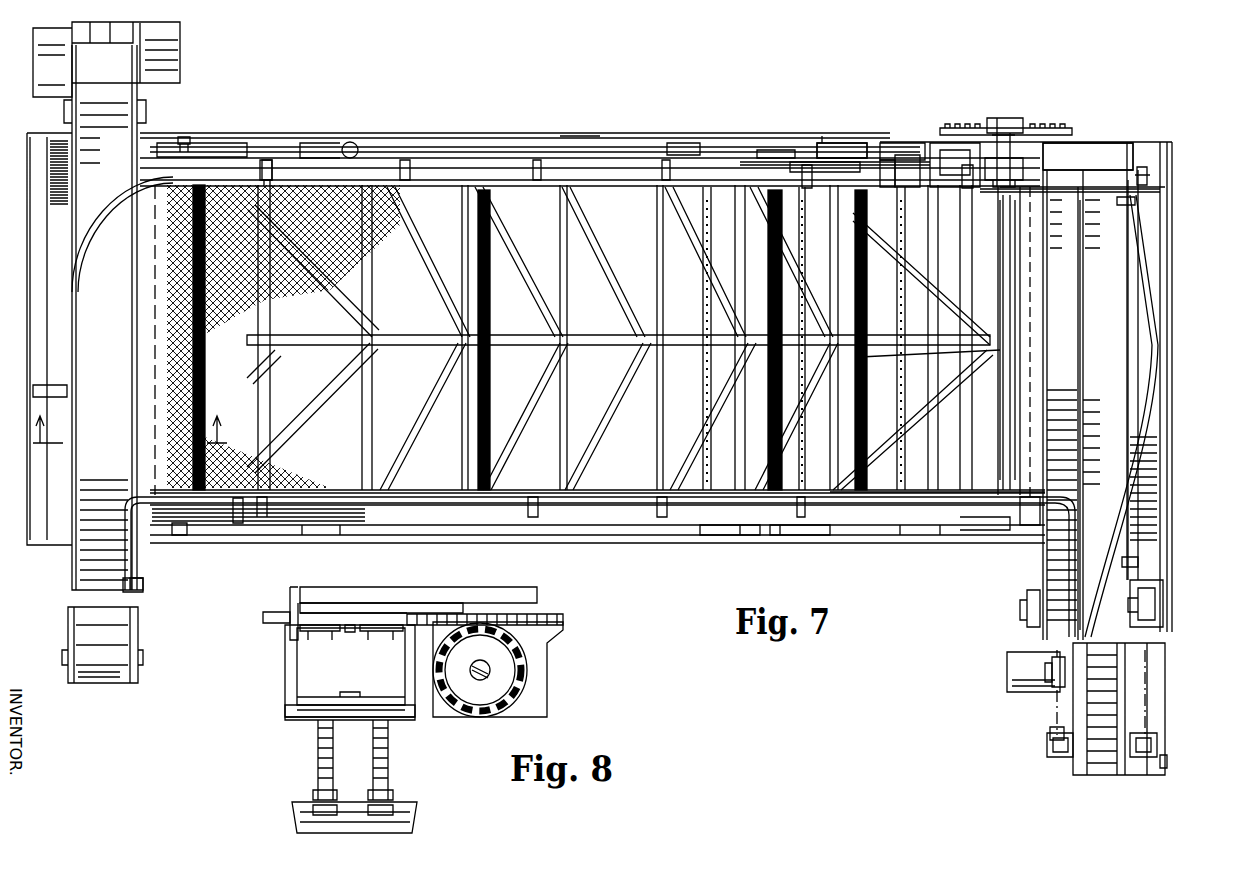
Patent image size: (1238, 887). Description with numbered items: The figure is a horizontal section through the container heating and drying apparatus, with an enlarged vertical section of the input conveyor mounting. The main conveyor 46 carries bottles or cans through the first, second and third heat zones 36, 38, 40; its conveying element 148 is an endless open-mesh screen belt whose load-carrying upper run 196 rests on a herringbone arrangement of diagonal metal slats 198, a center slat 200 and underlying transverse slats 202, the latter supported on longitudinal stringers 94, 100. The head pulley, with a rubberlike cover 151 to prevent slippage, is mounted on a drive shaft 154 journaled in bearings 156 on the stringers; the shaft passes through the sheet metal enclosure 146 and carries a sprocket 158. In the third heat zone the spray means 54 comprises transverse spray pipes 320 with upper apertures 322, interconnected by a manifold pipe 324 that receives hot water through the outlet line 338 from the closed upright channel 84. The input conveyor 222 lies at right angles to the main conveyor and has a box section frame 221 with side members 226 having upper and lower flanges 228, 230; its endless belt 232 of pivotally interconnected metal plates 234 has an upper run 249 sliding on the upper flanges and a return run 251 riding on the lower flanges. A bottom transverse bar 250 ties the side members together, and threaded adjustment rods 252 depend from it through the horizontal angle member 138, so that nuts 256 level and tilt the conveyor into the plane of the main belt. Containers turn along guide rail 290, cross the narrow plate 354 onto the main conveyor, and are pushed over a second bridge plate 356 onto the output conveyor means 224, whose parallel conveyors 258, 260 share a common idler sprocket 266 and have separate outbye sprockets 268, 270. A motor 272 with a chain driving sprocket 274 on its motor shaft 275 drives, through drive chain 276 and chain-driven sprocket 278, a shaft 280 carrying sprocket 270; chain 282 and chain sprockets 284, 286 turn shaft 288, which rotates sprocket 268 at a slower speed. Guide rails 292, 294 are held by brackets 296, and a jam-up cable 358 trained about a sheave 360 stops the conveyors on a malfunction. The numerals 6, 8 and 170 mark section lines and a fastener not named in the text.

In FIG. 7, the cross bar 6 is at (40, 386).
In FIG. 7, the section line 8 is at (129, 420).
In FIG. 7, the first heat zone 36 is at (359, 128).
In FIG. 7, the second heat zone 38 is at (576, 127).
In FIG. 7, the third heat zone 40 is at (784, 128).
In FIG. 7, the main conveyor 46 is at (605, 190).
In FIG. 7, the sprays 54 is at (805, 527).
In FIG. 7, the upright channel member 84 is at (895, 158).
In FIG. 7, the longitudinal stringer channel 94 is at (742, 527).
In FIG. 7, the longitudinal stringer 100 is at (708, 162).
In FIG. 8, the horizontal angle member 138 is at (410, 822).
In FIG. 7, the sheet metal enclosure 146 is at (405, 142).
In FIG. 7, the conveying element 148 is at (290, 185).
In FIG. 7, the rubberlike cover 151 is at (1015, 258).
In FIG. 7, the drive shaft 154 is at (1003, 130).
In FIG. 7, the bearings 156 is at (1015, 160).
In FIG. 7, the sprocket 158 is at (968, 128).
In FIG. 7, the fastener 170 is at (183, 136).
In FIG. 7, the upper run 196 is at (305, 290).
In FIG. 8, the upper run 196 is at (560, 622).
In FIG. 7, the diagonal metal slats 198 is at (540, 255).
In FIG. 7, the center slat 200 is at (402, 346).
In FIG. 7, the transverse slats 202 is at (268, 158).
In FIG. 8, the box section frame 221 is at (280, 651).
In FIG. 7, the input conveyor 222 is at (66, 583).
In FIG. 8, the input conveyor 222 is at (360, 598).
In FIG. 7, the output conveyor means 224 is at (1095, 155).
In FIG. 8, the side members 226 is at (286, 665).
In FIG. 8, the upper flanges 228 is at (318, 632).
In FIG. 8, the lower flanges 230 is at (288, 710).
In FIG. 8, the endless belt 232 is at (353, 640).
In FIG. 7, the metal plates 234 is at (78, 640).
In FIG. 8, the upper run 249 is at (405, 610).
In FIG. 8, the bottom transverse bar 250 is at (312, 720).
In FIG. 8, the return run 251 is at (315, 696).
In FIG. 8, the adjustment rods 252 is at (318, 765).
In FIG. 8, the nuts 256 is at (313, 810).
In FIG. 7, the output conveyor 258 is at (1060, 297).
In FIG. 7, the output conveyor 260 is at (1130, 260).
In FIG. 7, the common idler sprocket 266 is at (1150, 200).
In FIG. 7, the sprocket 268 is at (1027, 615).
In FIG. 7, the sprocket 270 is at (1073, 776).
In FIG. 7, the motor 272 is at (1010, 680).
In FIG. 7, the chain driving sprocket 274 is at (1058, 657).
In FIG. 7, the motor shaft 275 is at (1048, 675).
In FIG. 7, the drive chain 276 is at (1055, 722).
In FIG. 7, the chain-driven sprocket 278 is at (1048, 736).
In FIG. 7, the shaft 280 is at (1062, 758).
In FIG. 7, the chain 282 is at (1150, 700).
In FIG. 7, the chain sprocket 284 is at (1155, 765).
In FIG. 7, the chain sprocket 286 is at (1165, 590).
In FIG. 7, the shaft 288 is at (1140, 590).
In FIG. 7, the guide rail 290 is at (112, 202).
In FIG. 8, the guide rail 290 is at (515, 598).
In FIG. 7, the guide rail 292 is at (240, 525).
In FIG. 7, the guide rail 294 is at (1150, 365).
In FIG. 8, the brackets 296 is at (275, 612).
In FIG. 7, the spray pipes 320 is at (1040, 370).
In FIG. 7, the upper apertures 322 is at (705, 300).
In FIG. 7, the manifold pipe 324 is at (840, 165).
In FIG. 7, the outlet line 338 is at (905, 150).
In FIG. 7, the narrow plate 354 is at (148, 287).
In FIG. 8, the narrow plate 354 is at (445, 613).
In FIG. 7, the second bridge plate 356 is at (1030, 512).
In FIG. 7, the jam-up cable 358 is at (1150, 315).
In FIG. 7, the sheave 360 is at (1143, 170).